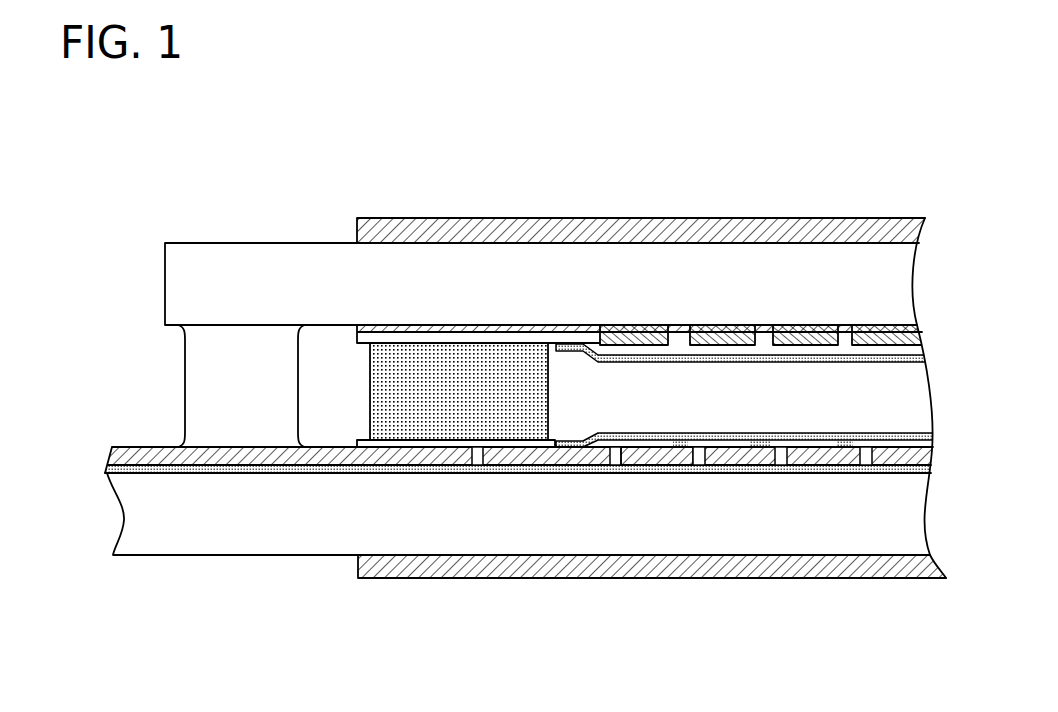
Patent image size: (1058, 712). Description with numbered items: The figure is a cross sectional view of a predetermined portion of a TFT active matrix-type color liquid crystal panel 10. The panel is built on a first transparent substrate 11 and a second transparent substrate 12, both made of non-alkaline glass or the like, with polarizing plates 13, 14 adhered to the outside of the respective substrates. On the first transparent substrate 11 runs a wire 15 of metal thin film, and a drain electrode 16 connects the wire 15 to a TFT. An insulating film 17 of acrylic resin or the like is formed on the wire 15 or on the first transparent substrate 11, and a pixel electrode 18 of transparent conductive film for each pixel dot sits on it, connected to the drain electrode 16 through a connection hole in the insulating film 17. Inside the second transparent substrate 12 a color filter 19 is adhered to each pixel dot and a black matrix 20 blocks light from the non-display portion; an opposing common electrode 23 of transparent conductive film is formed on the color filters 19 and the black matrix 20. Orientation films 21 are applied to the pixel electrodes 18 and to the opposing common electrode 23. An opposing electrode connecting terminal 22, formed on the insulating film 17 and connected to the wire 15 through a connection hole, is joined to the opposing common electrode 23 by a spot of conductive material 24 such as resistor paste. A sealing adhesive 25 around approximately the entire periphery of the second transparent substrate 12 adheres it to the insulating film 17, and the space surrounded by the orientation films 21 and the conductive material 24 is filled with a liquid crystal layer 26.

The TFT active matrix-type color liquid crystal panel 10 is at (207, 231).
The first transparent substrate 11 is at (182, 556).
The second transparent substrate 12 is at (318, 242).
The polarizing plate 13 is at (548, 580).
The polarizing plate 14 is at (470, 218).
The wire 15 is at (263, 474).
The drain electrode 16 is at (690, 448).
The insulating film 17 is at (148, 447).
The pixel electrode 18 is at (668, 474).
The color filter 19 is at (727, 327).
The black matrix 20 is at (667, 327).
The orientation film 21 is at (817, 362).
The opposing electrode connecting terminal 22 is at (557, 438).
The opposing common electrode 23 is at (348, 335).
The conductive material 24 is at (437, 408).
The sealing adhesive 25 is at (195, 357).
The liquid crystal layer 26 is at (726, 411).